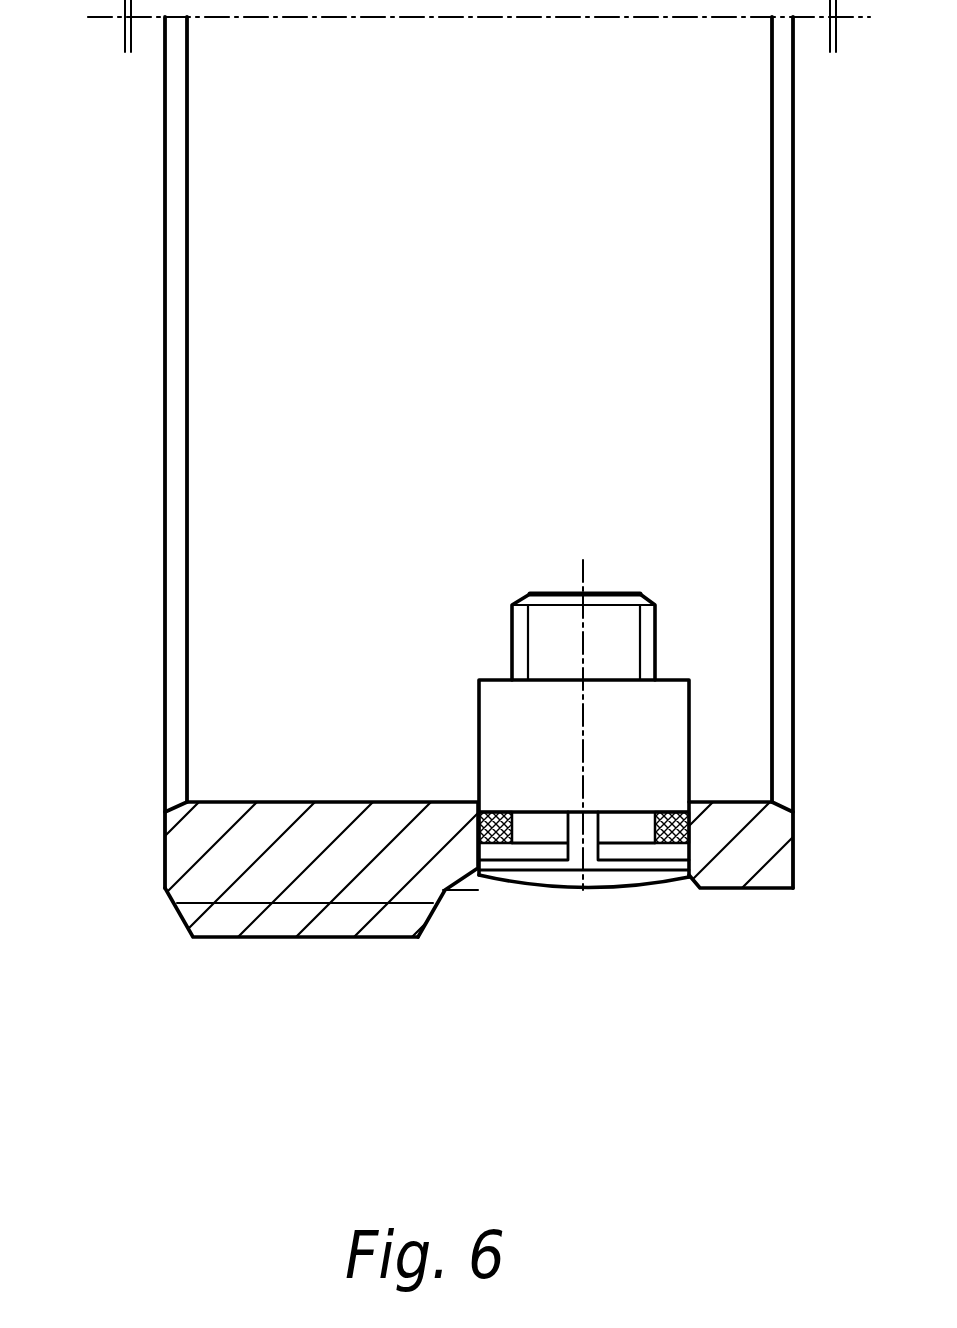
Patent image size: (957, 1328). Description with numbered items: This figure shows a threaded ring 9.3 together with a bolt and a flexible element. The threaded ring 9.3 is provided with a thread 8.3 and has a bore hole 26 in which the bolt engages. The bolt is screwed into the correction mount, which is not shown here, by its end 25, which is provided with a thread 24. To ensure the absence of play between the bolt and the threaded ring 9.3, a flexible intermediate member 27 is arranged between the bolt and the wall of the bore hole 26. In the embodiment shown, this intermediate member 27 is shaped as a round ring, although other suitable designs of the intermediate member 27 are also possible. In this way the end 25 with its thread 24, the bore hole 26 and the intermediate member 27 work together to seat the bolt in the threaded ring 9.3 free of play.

The threaded ring 9.3 is at (193, 843).
The thread 8.3 is at (228, 918).
The thread 24 is at (645, 635).
The end of bolt 25 is at (558, 637).
The bore hole 26 is at (640, 863).
The flexible intermediate member 27 is at (503, 837).